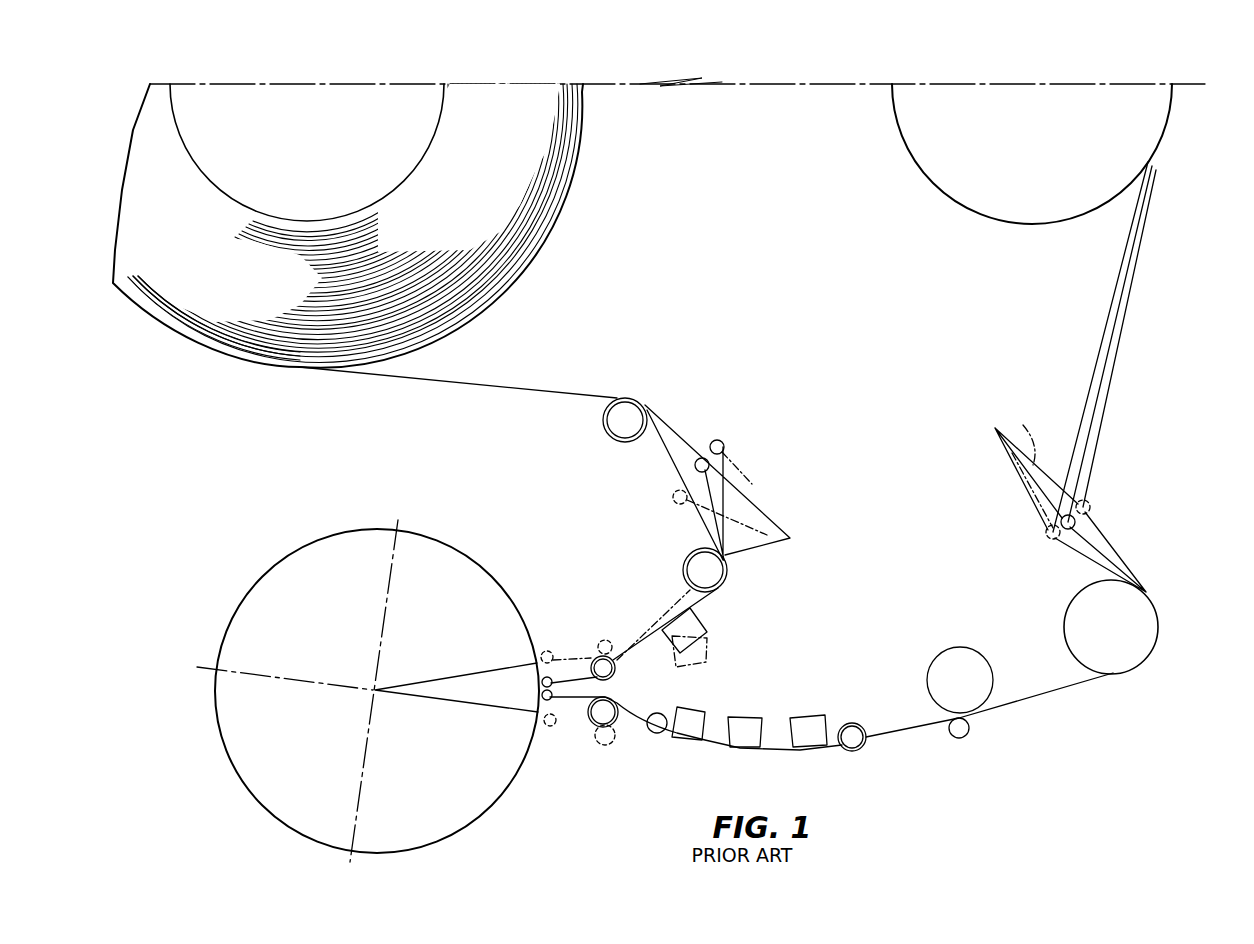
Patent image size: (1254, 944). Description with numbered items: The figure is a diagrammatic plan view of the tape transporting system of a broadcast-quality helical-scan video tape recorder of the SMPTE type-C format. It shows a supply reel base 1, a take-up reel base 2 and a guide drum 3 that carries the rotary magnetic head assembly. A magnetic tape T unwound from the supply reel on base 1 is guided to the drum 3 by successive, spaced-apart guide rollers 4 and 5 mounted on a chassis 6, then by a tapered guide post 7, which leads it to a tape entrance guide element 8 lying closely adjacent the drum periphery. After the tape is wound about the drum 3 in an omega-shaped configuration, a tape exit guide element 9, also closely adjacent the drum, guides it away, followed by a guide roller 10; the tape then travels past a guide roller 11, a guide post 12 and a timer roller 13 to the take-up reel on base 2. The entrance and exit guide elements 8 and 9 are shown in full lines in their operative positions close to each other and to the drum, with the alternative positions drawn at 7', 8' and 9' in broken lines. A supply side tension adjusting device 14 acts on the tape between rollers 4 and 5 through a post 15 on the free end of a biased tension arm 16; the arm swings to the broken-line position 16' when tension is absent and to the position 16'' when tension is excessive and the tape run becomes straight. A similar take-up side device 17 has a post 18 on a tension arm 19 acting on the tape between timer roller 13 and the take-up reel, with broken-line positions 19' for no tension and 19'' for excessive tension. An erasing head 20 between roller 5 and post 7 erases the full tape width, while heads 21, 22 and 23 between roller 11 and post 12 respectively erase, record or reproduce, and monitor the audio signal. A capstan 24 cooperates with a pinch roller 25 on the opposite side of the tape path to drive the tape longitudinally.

The supply reel base 1 is at (229, 198).
The take-up reel base 2 is at (996, 214).
The guide drum 3 is at (462, 583).
The guide roller 4 is at (628, 400).
The guide roller 5 is at (723, 580).
The chassis 6 is at (770, 329).
The tapered guide post 7 is at (591, 649).
The alternate position of guide roller 7 7' is at (643, 623).
The tape entrance guide element 8 is at (517, 664).
The alternate position of roller 8 8' is at (566, 629).
The tape exit guide element 9 is at (526, 688).
The alternate position of roller 9 9' is at (557, 748).
The guide roller 10 is at (617, 717).
The guide roller 11 is at (658, 732).
The guide post 12 is at (858, 749).
The timer roller 13 is at (1119, 665).
The supply side tension adjusting device 14 is at (765, 447).
The post 15 is at (697, 468).
The tension arm 16 is at (764, 477).
The broken-line position of tension arm 16' is at (771, 468).
The broken-line position of tension arm 16'' is at (756, 532).
The take-up side tension adjusting device 17 is at (1005, 535).
The post 18 is at (1077, 523).
The tension arm 19 is at (1017, 479).
The broken-line position of tension arm 19' is at (1008, 490).
The broken-line position of tension arm 19'' is at (1018, 433).
The erasing head 20 is at (705, 617).
The head 21 is at (693, 720).
The head 22 is at (752, 727).
The head 23 is at (812, 725).
The capstan 24 is at (958, 738).
The pinch roller 25 is at (966, 658).
The magnetic tape T is at (531, 382).